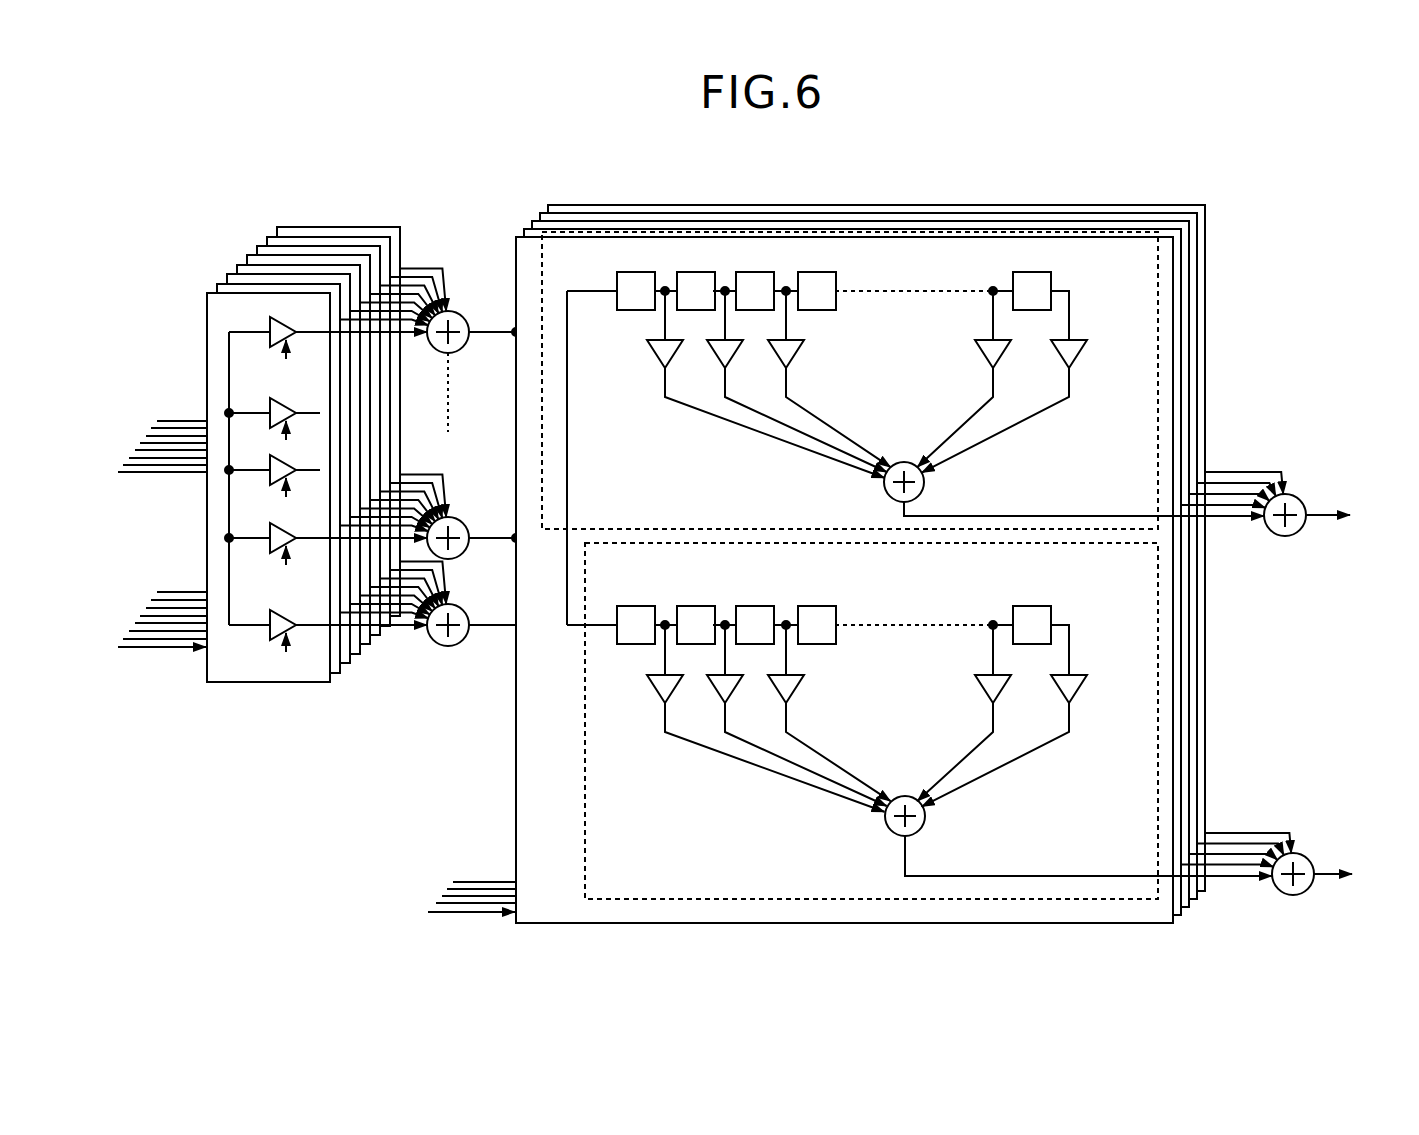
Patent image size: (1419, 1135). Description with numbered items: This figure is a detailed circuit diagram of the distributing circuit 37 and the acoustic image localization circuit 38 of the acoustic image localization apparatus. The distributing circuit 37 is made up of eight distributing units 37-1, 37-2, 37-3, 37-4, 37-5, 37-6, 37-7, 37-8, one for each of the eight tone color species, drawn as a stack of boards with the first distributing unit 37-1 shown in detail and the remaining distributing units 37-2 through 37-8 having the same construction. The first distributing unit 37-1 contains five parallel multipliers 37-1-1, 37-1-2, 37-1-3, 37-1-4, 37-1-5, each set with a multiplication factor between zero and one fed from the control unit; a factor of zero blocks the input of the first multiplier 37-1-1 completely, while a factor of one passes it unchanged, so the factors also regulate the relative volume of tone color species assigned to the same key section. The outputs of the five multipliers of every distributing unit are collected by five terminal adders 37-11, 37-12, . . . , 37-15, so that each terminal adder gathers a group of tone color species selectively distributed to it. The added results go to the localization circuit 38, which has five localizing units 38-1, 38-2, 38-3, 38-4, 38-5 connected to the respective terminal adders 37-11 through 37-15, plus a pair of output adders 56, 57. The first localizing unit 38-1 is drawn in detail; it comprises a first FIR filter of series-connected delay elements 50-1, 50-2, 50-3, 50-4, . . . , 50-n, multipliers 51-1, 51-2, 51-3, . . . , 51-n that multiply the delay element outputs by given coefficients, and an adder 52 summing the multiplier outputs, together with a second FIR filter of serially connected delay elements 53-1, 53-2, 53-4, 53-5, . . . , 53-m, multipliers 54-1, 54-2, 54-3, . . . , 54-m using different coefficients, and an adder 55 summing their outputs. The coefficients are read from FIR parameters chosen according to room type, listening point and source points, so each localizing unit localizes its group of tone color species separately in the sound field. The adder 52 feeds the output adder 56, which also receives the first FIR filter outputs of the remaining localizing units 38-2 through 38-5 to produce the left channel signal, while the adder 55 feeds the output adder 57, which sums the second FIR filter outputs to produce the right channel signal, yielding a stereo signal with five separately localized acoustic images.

The distributing circuit 37 is at (249, 755).
The first distributing unit 37-1 is at (278, 683).
The distributing unit 37-2 is at (340, 673).
The distributing unit 37-3 is at (345, 664).
The distributing unit 37-4 is at (234, 266).
The distributing unit 37-5 is at (247, 257).
The distributing unit 37-6 is at (256, 246).
The distributing unit 37-7 is at (289, 237).
The distributing unit 37-8 is at (338, 227).
The first multiplier 37-1-1 is at (290, 636).
The multiplier 37-1-2 is at (273, 537).
The multiplier 37-1-3 is at (270, 477).
The multiplier 37-1-4 is at (280, 410).
The multiplier 37-1-5 is at (280, 327).
The terminal adder 37-11 is at (450, 647).
The terminal adder 37-12 is at (465, 517).
The terminal adder 37-15 is at (463, 312).
The acoustic image localization circuit 38 is at (518, 212).
The first localizing unit 38-1 is at (722, 237).
The localizing unit 38-2 is at (802, 229).
The localizing unit 38-3 is at (893, 221).
The localizing unit 38-4 is at (1033, 213).
The localizing unit 38-5 is at (1097, 205).
The delay element 50-1 is at (617, 280).
The delay element 50-2 is at (707, 272).
The delay element 50-3 is at (758, 253).
The delay element 50-4 is at (836, 278).
The delay element 50-n is at (1052, 278).
The multiplier 51-1 is at (657, 357).
The multiplier 51-2 is at (717, 360).
The multiplier 51-3 is at (798, 342).
The multiplier 51-n is at (1078, 340).
The adder 52 is at (927, 487).
The delay element 53-1 is at (632, 606).
The delay element 53-2 is at (693, 606).
The delay element 53-4 is at (757, 606).
The delay element 53-5 is at (817, 606).
The delay element 53-m is at (1032, 606).
The multiplier 54-1 is at (655, 688).
The multiplier 54-2 is at (712, 693).
The multiplier 54-3 is at (793, 693).
The multiplier 54-m is at (1078, 673).
The adder 55 is at (925, 820).
The output adder 56 is at (1285, 537).
The output adder 57 is at (1307, 850).